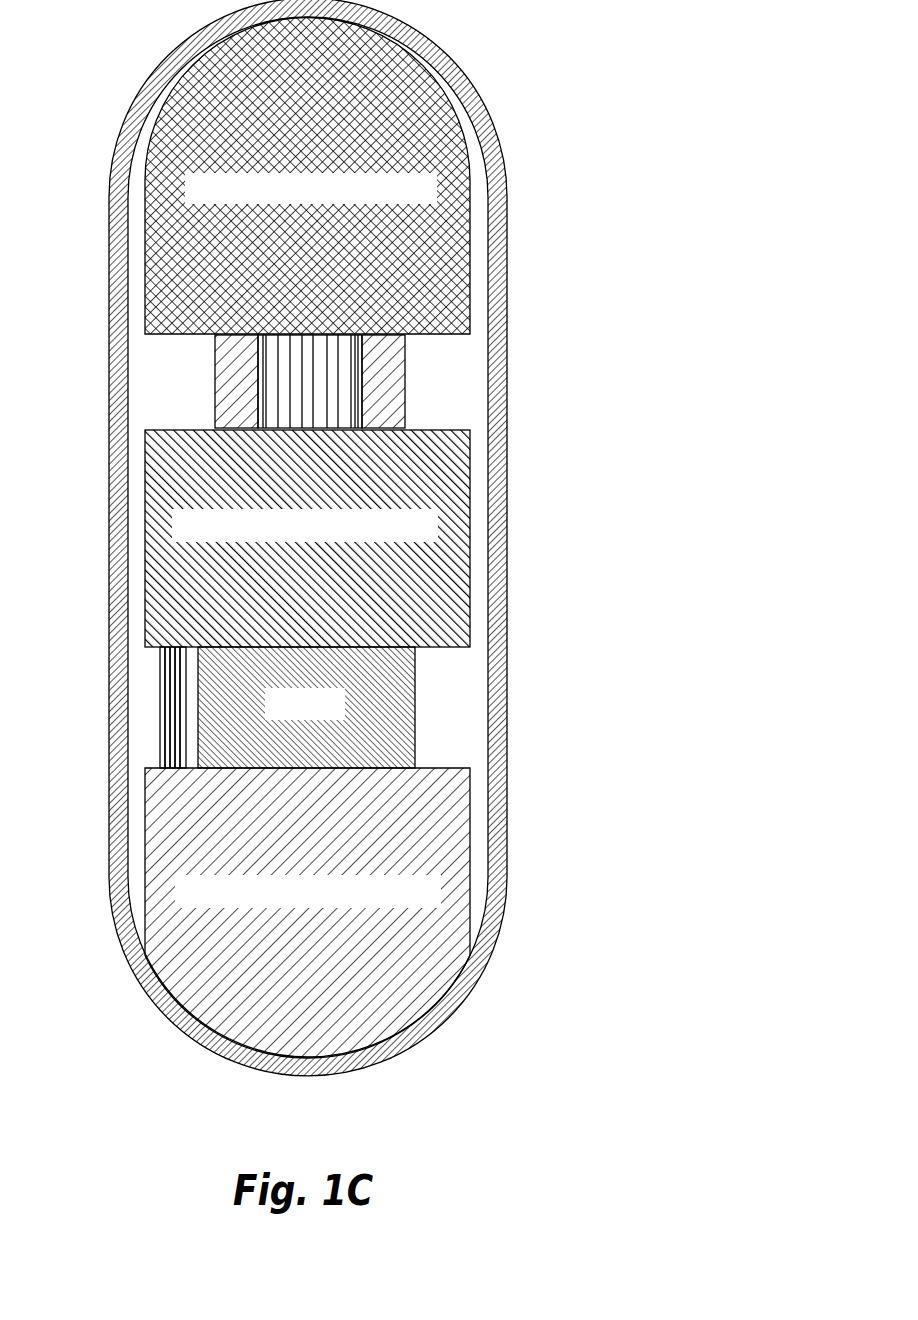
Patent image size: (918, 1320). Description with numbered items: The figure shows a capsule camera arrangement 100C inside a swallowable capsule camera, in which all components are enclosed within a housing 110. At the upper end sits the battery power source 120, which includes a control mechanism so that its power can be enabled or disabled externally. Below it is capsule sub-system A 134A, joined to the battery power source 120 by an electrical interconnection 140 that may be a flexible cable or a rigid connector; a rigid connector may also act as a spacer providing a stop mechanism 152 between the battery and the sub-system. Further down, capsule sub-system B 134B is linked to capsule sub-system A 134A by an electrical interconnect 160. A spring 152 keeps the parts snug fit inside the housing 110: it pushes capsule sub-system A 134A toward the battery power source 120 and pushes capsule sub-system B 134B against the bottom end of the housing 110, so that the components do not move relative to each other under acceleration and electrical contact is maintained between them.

The capsule camera arrangement 100C is at (583, 116).
The housing 110 is at (443, 57).
The battery power source 120 is at (470, 280).
The electrical interconnection 140 is at (355, 373).
The spring / stop mechanism 152 is at (215, 380).
The capsule sub-system A 134A is at (470, 567).
The capsule sub-system B 134B is at (470, 895).
The electrical interconnect 160 is at (160, 708).